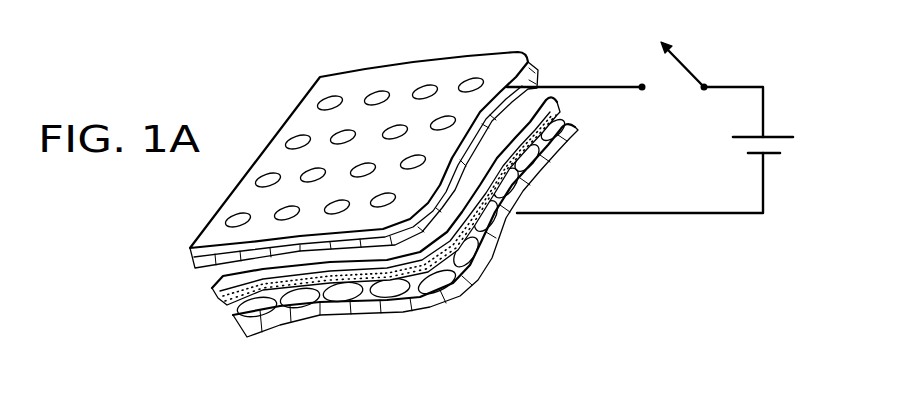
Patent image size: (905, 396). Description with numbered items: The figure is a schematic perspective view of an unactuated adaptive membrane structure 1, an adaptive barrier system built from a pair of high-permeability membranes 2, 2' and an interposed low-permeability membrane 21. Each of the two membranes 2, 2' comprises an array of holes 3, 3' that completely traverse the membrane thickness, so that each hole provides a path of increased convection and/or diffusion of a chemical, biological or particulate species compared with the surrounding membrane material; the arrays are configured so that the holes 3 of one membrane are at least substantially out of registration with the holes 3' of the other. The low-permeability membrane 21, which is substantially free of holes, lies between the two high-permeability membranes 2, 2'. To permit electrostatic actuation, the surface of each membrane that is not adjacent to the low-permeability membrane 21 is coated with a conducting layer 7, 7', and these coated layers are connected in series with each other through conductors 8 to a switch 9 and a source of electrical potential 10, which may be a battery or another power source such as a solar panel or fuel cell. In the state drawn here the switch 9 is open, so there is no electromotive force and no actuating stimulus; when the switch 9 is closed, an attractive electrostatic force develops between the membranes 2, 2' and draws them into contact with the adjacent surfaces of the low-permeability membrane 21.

The adaptive membrane structure 1 is at (285, 55).
The high-permeability membrane 2 is at (383, 146).
The holes 3 is at (375, 117).
The conducting layer 7 is at (377, 142).
The high-permeability membrane 2' is at (432, 219).
The holes 3' is at (424, 207).
The conducting layer 7' is at (405, 232).
The low-permeability membrane 21 is at (221, 297).
The conductors 8 is at (606, 87).
The switch 9 is at (688, 52).
The source of electrical potential 10 is at (787, 130).